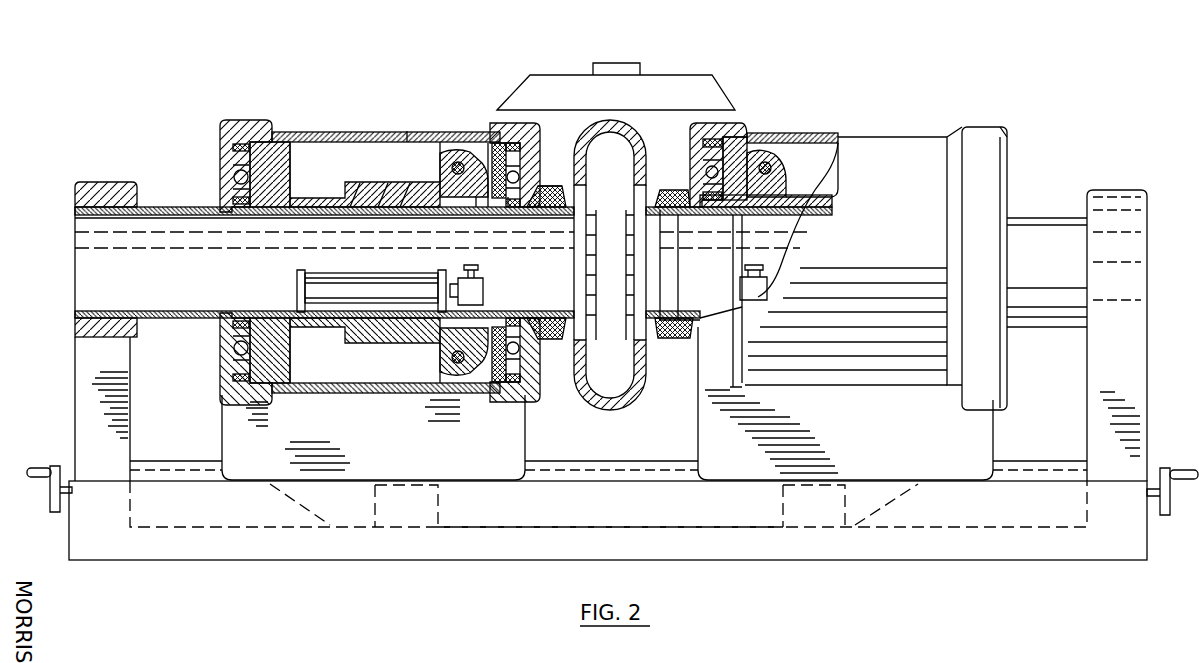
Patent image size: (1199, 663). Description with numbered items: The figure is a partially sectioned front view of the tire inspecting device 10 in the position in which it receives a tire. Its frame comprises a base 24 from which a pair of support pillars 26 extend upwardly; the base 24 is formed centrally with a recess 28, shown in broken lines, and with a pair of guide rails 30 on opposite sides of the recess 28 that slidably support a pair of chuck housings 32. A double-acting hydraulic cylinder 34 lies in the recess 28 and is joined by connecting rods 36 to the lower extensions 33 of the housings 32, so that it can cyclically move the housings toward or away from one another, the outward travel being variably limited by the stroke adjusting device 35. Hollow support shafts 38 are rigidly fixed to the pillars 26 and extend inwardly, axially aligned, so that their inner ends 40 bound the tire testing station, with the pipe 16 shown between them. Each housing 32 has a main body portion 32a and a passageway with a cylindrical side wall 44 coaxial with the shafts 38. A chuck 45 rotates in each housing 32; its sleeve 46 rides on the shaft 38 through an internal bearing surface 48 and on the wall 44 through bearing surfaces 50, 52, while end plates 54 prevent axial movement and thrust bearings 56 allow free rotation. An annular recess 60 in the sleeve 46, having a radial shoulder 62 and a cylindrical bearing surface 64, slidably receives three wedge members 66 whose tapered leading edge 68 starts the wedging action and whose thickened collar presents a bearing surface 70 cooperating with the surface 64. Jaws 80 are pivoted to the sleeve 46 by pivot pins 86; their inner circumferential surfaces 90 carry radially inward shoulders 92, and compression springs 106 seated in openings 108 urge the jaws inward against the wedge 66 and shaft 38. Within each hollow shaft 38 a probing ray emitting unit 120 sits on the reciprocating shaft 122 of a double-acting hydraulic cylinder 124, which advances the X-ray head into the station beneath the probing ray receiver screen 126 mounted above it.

The tire inspecting device 10 is at (298, 99).
The pipe 16 is at (638, 135).
The base 24 is at (1112, 557).
The support pillars 26 is at (125, 398).
The recess 28 is at (1043, 523).
The guide rails 30 is at (177, 462).
The chuck housings 32 is at (357, 116).
The main body portion 32a is at (407, 131).
The lower extensions 33 is at (317, 512).
The double-acting hydraulic cylinder 34 is at (612, 520).
The stroke adjusting device 35 is at (49, 486).
The connecting rods 36 is at (405, 508).
The hollow support shafts 38 is at (161, 210).
The inner ends of support shafts 40 is at (493, 308).
The cylindrical side wall 44 is at (355, 386).
The chucks 45 is at (364, 166).
The sleeve 46 is at (311, 195).
The internal bearing surface 48 is at (248, 214).
The bearing surface 50 is at (268, 140).
The bearing surface 52 is at (536, 143).
The end plates 54 is at (229, 155).
The thrust bearings 56 is at (234, 178).
The annular recess 60 is at (362, 212).
The radial shoulder 62 is at (347, 209).
The cylindrical bearing surface 64 is at (425, 196).
The wedge members 66 is at (418, 207).
The leading edge of wedge 68 is at (553, 218).
The bearing surface of wedge collar 70 is at (384, 200).
The jaws 80 is at (482, 200).
The pivot pins 86 is at (455, 362).
The inner circumferentially extending surfaces 90 is at (513, 200).
The radially inwardly directed shoulders 92 is at (520, 205).
The compression springs 106 is at (490, 165).
The openings 108 is at (495, 152).
The probing ray emitting units 120 is at (478, 290).
The reciprocating shafts 122 is at (466, 266).
The double-acting hydraulic cylinders 124 is at (297, 290).
The probing ray receiver screen 126 is at (683, 85).